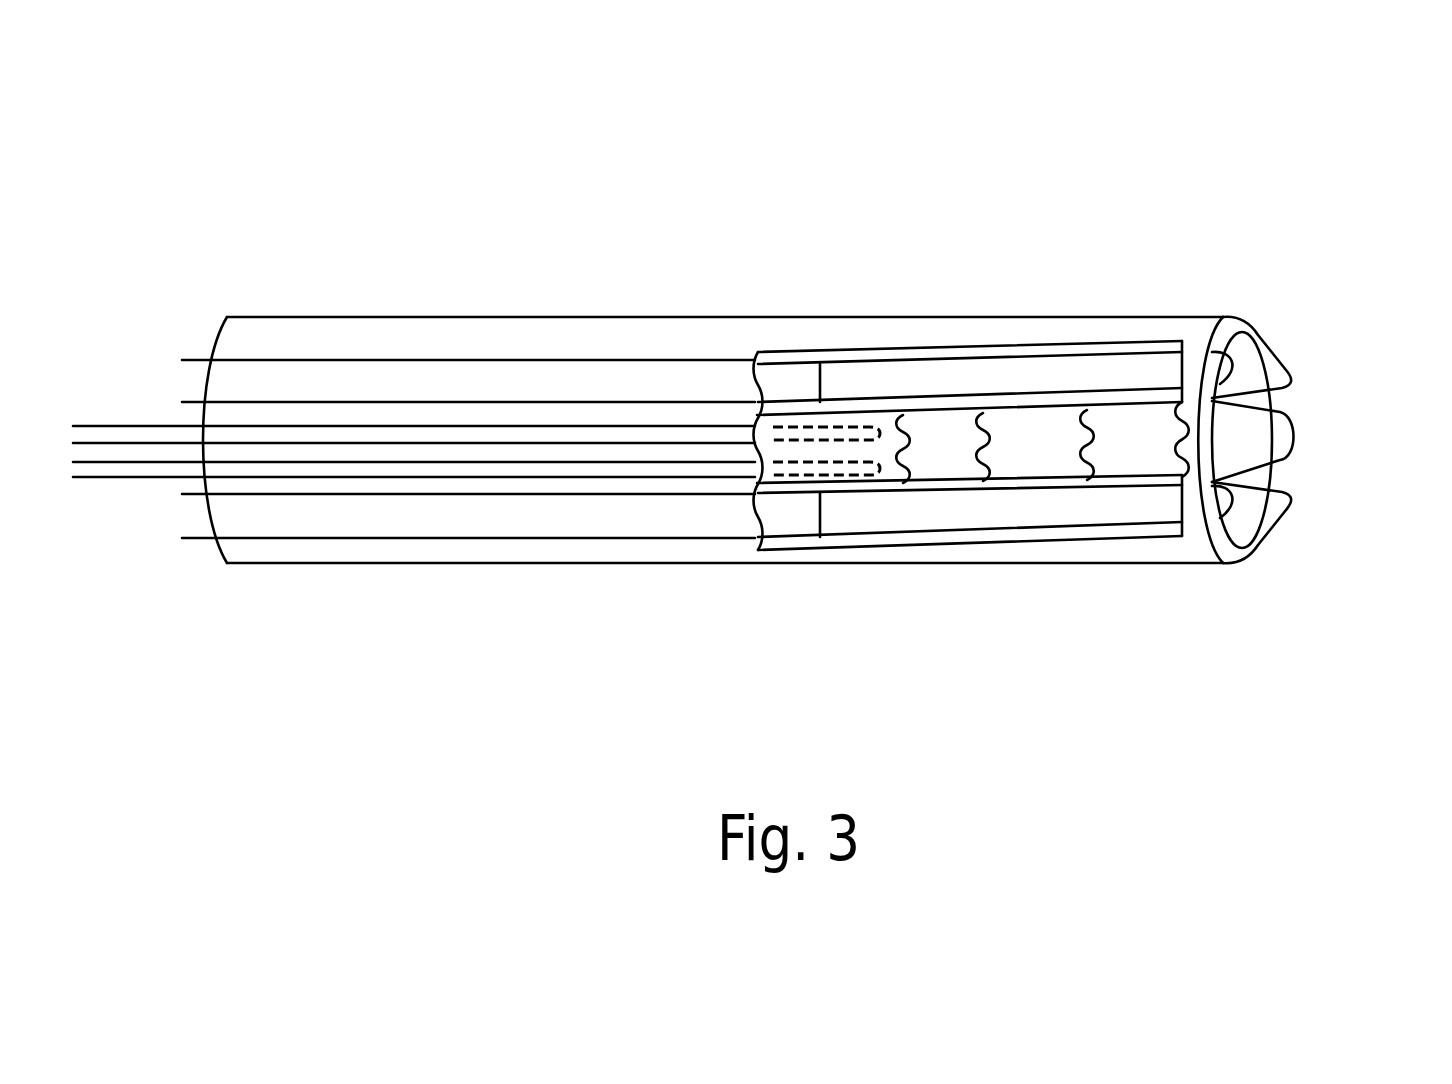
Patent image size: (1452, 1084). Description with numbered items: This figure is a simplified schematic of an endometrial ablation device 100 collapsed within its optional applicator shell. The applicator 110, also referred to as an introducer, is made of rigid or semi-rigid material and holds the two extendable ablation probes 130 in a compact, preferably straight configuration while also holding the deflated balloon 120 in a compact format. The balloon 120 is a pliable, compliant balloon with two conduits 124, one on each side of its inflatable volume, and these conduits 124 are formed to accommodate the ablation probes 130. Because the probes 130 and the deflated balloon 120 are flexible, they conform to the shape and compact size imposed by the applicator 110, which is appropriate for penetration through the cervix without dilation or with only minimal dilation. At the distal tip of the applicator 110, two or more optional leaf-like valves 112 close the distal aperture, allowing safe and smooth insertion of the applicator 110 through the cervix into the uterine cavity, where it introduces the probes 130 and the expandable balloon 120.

The endometrial ablation device 100 is at (303, 317).
The applicator 110 is at (788, 317).
The leaf-like valves 112 is at (1283, 345).
The balloon 120 is at (1065, 440).
The conduits 124 is at (918, 355).
The ablation probes 130 is at (993, 377).